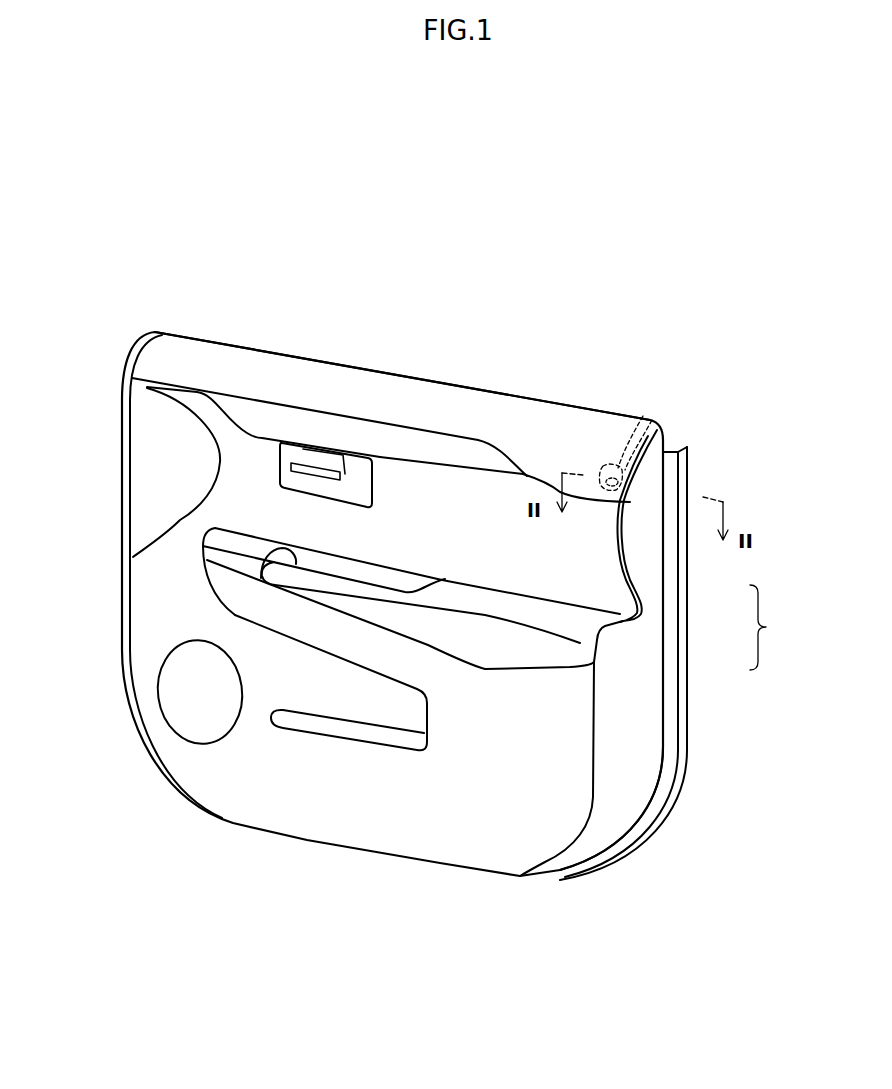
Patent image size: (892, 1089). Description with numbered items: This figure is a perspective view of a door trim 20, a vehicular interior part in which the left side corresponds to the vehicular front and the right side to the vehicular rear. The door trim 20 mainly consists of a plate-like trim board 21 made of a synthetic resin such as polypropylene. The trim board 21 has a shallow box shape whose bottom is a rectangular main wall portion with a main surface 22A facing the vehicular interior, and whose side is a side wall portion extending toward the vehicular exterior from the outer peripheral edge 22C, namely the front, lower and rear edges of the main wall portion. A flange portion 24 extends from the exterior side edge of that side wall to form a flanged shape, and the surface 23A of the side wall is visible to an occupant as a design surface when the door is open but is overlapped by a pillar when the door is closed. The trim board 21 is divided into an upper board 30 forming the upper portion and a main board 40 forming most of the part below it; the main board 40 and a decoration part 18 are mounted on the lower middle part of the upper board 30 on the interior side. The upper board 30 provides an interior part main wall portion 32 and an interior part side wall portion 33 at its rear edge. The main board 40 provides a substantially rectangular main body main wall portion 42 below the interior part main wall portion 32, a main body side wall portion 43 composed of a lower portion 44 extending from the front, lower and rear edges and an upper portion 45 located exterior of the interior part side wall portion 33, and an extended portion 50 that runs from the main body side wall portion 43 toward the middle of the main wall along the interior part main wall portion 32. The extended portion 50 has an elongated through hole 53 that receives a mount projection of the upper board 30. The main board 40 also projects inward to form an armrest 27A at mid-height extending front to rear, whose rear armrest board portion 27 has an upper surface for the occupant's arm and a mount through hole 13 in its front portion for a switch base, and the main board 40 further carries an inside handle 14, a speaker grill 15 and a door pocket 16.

The door trim 20 is at (593, 332).
The trim board 21 is at (366, 385).
The main board 40 is at (152, 433).
The upper board 30 is at (177, 354).
The interior part main wall portion 32 is at (343, 392).
The main body main wall portion 42 is at (452, 507).
The main surface 22A is at (402, 493).
The outer peripheral edge 22C is at (593, 797).
The decoration part 18 is at (273, 418).
The inside handle 14 is at (305, 480).
The speaker grill 15 is at (203, 702).
The door pocket 16 is at (353, 732).
The mount through hole 13 is at (261, 578).
The armrest board portion 27 is at (530, 645).
The armrest 27A is at (457, 593).
The extended portion 50 is at (603, 466).
The elongated through hole 53 is at (652, 420).
The interior part side wall portion 33 is at (662, 437).
The main body side wall portion 43 is at (780, 627).
The lower portion 44 is at (633, 673).
The upper portion 45 is at (650, 486).
The flange portion 24 is at (670, 716).
The surface of the side wall portion 23A is at (640, 741).